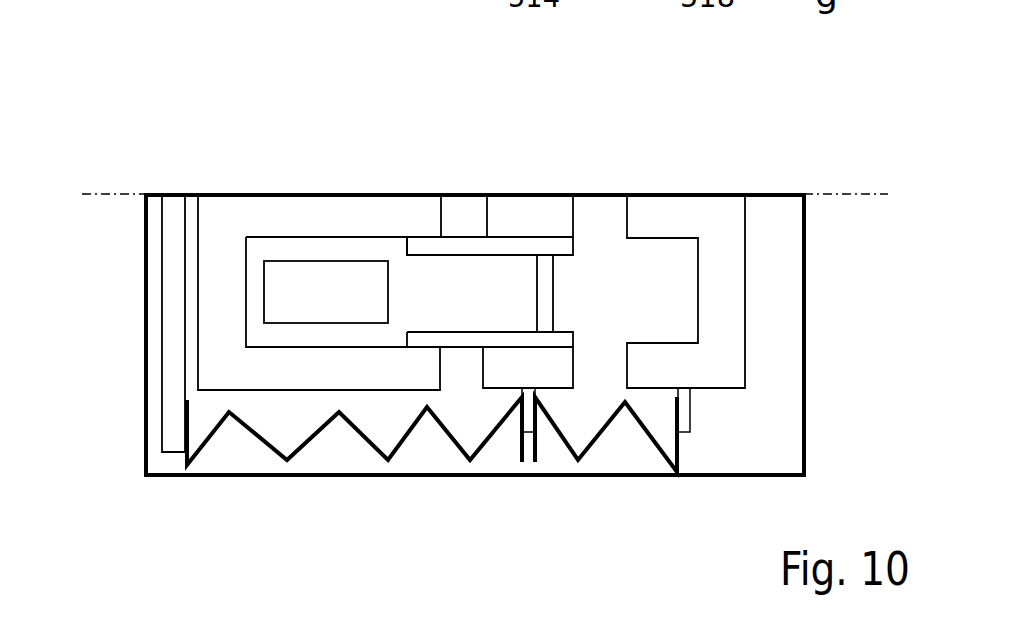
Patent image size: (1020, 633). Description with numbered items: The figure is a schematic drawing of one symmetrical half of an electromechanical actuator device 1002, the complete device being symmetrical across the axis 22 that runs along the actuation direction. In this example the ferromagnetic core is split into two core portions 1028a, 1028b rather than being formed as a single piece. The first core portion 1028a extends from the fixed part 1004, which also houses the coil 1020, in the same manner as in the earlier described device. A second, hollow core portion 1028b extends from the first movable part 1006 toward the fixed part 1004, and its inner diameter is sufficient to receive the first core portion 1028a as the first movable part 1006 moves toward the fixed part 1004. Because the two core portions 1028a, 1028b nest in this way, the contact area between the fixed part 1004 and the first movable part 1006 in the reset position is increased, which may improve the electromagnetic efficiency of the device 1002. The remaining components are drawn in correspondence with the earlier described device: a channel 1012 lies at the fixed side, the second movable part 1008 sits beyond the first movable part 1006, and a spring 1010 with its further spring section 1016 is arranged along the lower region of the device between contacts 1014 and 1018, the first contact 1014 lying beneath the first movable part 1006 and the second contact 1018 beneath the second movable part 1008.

The axis 22 is at (508, 197).
The electromechanical actuator device 1002 is at (178, 102).
The fixed part 1004 is at (229, 233).
The first movable part 1006 is at (517, 228).
The second movable part 1008 is at (707, 183).
The spring 1010 is at (432, 494).
The fixed part component 1012 is at (168, 408).
The contact 1014 is at (523, 432).
The spring section 1016 is at (578, 460).
The contact 1018 is at (686, 432).
The coil 1020 is at (307, 297).
The first core portion 1028a is at (322, 224).
The second hollow core portion 1028b is at (449, 250).